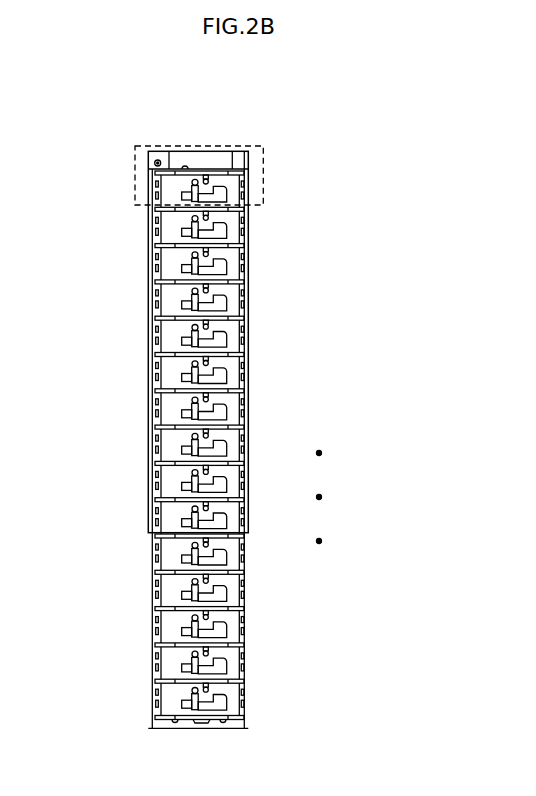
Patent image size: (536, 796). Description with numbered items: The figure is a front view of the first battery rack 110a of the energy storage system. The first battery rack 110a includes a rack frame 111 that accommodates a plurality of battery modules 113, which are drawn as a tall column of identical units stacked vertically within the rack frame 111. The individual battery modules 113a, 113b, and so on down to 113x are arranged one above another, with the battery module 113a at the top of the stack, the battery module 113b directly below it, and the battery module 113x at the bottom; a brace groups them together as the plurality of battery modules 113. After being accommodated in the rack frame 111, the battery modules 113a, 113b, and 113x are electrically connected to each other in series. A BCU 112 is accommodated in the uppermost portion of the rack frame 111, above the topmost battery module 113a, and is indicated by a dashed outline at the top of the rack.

The first battery rack 110a is at (116, 134).
The rack frame 111 is at (150, 406).
The BCU 112 is at (263, 175).
The battery modules 113 is at (353, 217).
The battery module 113a is at (247, 223).
The battery module 113b is at (247, 258).
The battery module 113x is at (247, 693).